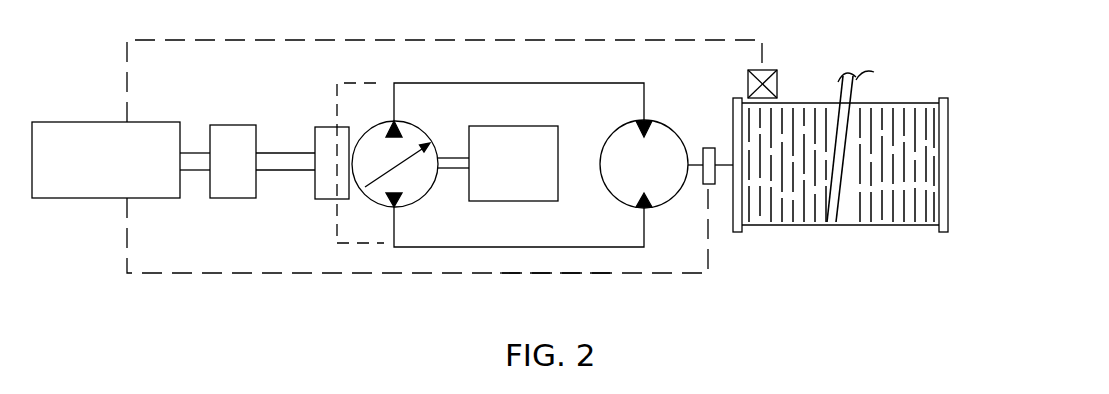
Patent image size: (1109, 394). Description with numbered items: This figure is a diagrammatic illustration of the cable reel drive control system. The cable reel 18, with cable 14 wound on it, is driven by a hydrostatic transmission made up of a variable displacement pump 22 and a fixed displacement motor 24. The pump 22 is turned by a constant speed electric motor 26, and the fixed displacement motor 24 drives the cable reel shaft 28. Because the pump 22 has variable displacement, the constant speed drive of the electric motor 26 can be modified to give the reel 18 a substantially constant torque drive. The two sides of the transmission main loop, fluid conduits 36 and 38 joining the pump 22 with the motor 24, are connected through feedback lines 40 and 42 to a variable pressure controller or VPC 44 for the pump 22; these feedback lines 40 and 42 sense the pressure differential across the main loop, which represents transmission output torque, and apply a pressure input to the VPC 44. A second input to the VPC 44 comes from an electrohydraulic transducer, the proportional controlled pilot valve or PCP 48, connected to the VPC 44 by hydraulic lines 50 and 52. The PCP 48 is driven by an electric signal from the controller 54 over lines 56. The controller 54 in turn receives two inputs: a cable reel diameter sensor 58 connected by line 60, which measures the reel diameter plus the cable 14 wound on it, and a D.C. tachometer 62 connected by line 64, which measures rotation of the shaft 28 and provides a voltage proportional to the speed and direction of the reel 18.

The cable 14 is at (858, 90).
The cable reel 18 is at (888, 224).
The variable displacement pump 22 is at (412, 122).
The fixed displacement motor 24 is at (616, 133).
The constant speed electric motor 26 is at (511, 202).
The cable reel shaft 28 is at (689, 163).
The fluid conduit 36 is at (522, 84).
The fluid conduit 38 is at (432, 248).
The feedback line 40 is at (372, 84).
The feedback line 42 is at (349, 246).
The variable pressure controller 44 is at (326, 200).
The proportional controlled pilot valve 48 is at (234, 124).
The hydraulic line 50 is at (292, 152).
The hydraulic line 52 is at (303, 172).
The controller 54 is at (86, 121).
The lines 56 is at (200, 154).
The cable reel diameter sensor 58 is at (778, 85).
The line 60 is at (165, 38).
The D.C. tachometer 62 is at (712, 186).
The line 64 is at (558, 276).